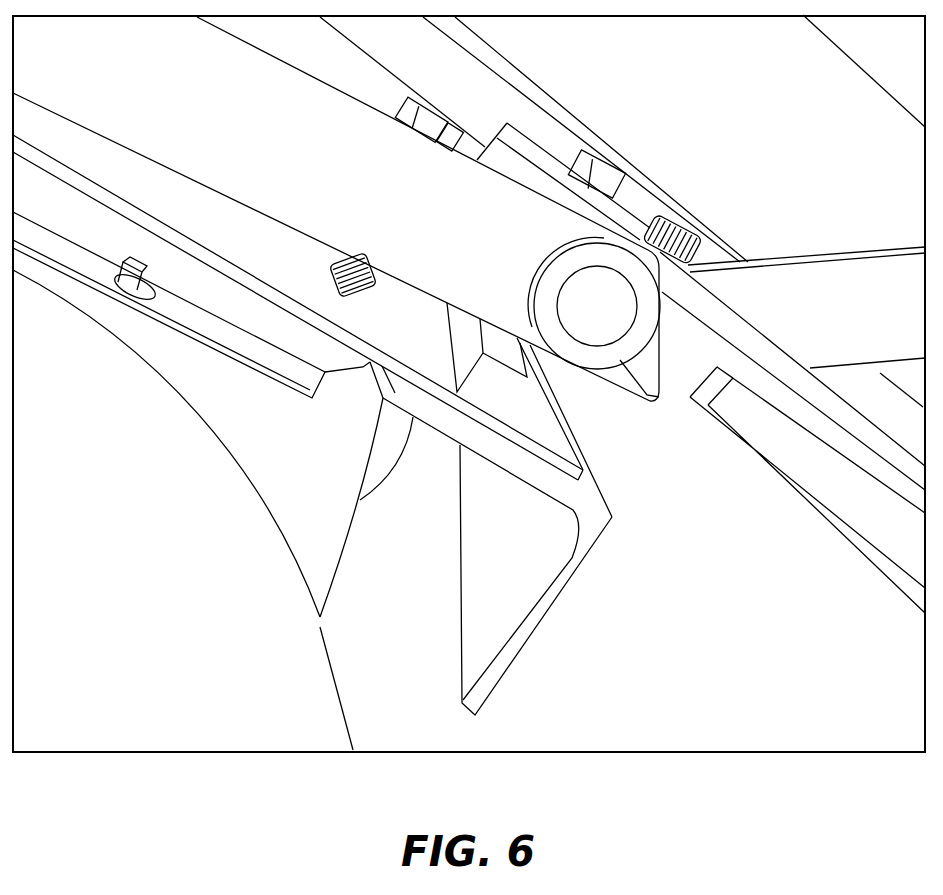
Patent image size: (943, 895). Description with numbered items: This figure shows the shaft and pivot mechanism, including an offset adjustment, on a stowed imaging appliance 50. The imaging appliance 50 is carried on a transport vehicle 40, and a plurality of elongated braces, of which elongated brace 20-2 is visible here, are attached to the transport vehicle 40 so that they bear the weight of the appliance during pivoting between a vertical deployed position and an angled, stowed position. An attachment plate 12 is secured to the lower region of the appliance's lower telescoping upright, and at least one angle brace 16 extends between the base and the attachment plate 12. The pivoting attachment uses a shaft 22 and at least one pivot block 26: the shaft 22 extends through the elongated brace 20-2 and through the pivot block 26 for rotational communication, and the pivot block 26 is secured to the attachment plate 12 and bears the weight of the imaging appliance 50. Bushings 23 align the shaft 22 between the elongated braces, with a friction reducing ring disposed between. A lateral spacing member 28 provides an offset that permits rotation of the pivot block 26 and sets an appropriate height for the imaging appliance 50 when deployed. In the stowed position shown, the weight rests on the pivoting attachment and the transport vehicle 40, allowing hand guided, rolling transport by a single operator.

The attachment plate 12 is at (520, 143).
The angle brace 16 is at (910, 334).
The elongated brace 20-2 is at (372, 188).
The shaft 22 is at (611, 320).
The bushing 23 is at (560, 258).
The pivot block 26 is at (672, 296).
The lateral spacing member 28 is at (490, 385).
The transport vehicle 40 is at (99, 228).
The imaging appliance 50 is at (775, 101).